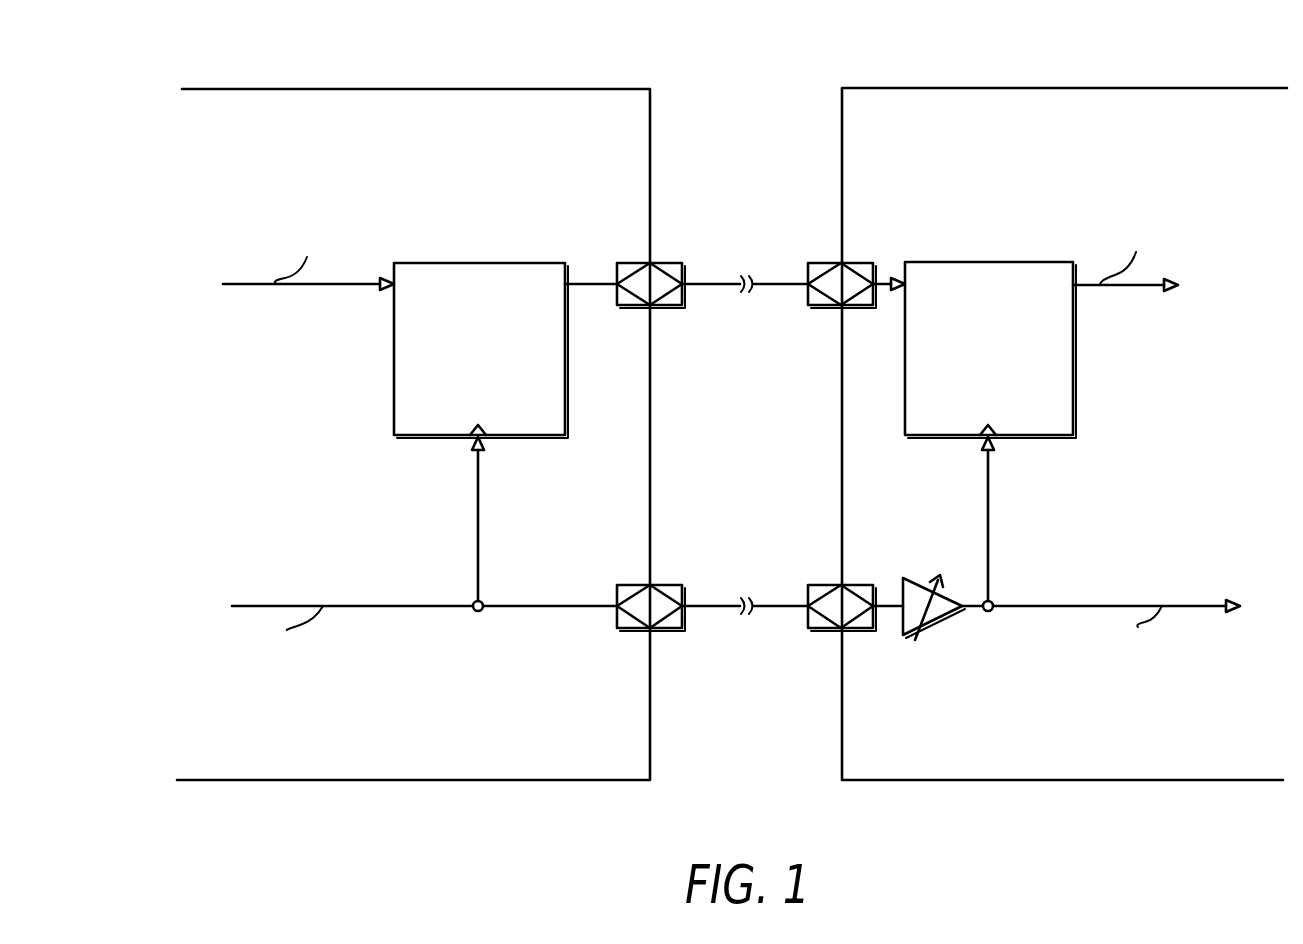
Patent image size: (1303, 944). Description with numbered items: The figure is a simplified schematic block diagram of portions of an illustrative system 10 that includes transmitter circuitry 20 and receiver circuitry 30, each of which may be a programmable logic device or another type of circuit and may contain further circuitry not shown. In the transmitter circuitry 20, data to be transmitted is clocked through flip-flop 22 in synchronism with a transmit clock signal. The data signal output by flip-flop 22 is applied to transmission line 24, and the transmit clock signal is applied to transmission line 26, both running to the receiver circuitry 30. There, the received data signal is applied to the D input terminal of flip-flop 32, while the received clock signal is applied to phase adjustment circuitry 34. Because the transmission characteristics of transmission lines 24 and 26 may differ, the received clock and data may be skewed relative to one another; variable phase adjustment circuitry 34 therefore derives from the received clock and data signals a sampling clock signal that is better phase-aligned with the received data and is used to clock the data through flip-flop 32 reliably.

The system 10 is at (315, 34).
The transmitter circuitry 20 is at (410, 89).
The flip-flop 22 is at (483, 263).
The transmission line 24 is at (705, 284).
The transmission line 26 is at (728, 606).
The receiver circuitry 30 is at (1157, 88).
The flip-flop 32 is at (985, 262).
The phase adjustment circuitry 34 is at (940, 624).